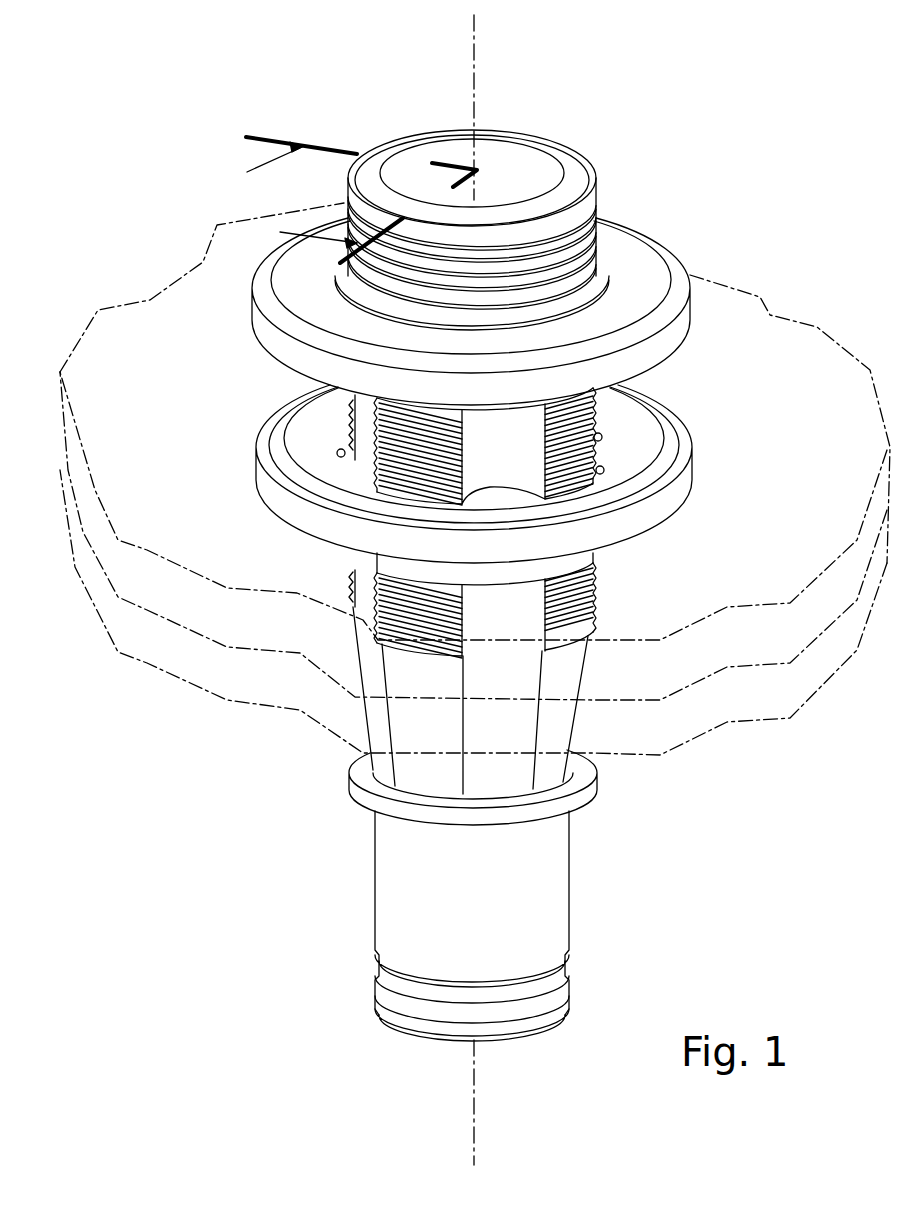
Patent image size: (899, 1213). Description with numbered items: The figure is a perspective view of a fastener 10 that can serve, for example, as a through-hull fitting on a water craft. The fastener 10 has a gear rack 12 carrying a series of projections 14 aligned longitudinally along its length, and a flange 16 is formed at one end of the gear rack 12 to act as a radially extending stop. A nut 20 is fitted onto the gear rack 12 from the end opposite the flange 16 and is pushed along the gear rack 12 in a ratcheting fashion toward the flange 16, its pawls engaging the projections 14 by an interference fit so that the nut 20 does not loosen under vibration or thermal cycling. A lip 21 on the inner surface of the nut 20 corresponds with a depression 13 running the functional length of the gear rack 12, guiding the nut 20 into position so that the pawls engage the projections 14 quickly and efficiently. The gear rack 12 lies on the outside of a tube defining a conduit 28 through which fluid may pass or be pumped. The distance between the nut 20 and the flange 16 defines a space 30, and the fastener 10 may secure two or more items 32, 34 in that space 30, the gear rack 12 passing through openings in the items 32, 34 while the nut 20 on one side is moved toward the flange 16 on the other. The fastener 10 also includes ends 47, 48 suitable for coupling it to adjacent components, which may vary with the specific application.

The fastener 10 is at (473, 590).
The gear rack 12 is at (523, 620).
The depression 13 is at (367, 450).
The projections 14 is at (593, 410).
The flange 16 is at (677, 288).
The nut 20 is at (683, 495).
The lip 21 is at (500, 497).
The conduit 28 is at (522, 155).
The space 30 is at (280, 385).
The item 32 is at (133, 628).
The item 34 is at (112, 560).
The end 47 is at (573, 167).
The end 48 is at (560, 893).